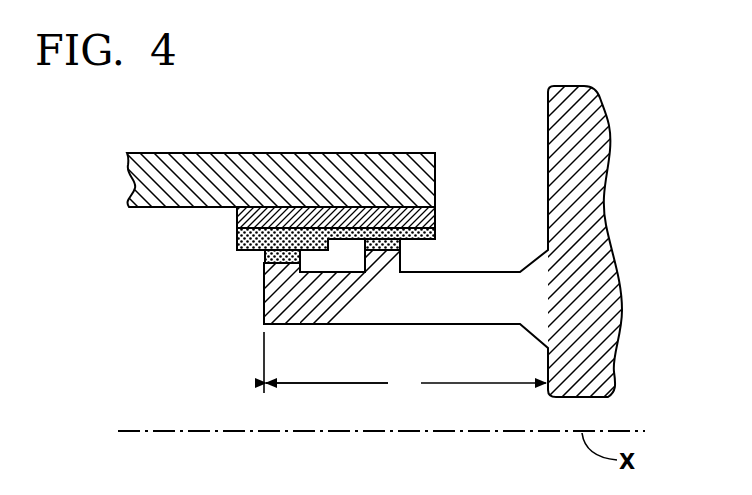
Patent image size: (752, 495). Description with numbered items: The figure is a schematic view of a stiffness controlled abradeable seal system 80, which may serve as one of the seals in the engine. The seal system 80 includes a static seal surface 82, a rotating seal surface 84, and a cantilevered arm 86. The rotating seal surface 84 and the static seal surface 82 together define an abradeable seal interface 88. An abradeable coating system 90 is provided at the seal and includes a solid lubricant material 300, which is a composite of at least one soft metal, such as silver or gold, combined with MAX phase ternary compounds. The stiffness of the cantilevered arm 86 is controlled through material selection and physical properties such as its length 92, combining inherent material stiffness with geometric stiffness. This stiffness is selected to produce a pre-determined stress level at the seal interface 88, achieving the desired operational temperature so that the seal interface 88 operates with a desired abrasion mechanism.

The stiffness controlled abradeable seal system 80 is at (426, 123).
The static seal surface 82 is at (306, 151).
The rotating seal surface 84 is at (641, 330).
The cantilevered arm 86 is at (373, 308).
The abradeable seal interface 88 is at (250, 266).
The abradeable coating system 90 is at (441, 233).
The length 92 is at (405, 364).
The solid lubricant material 300 is at (264, 258).